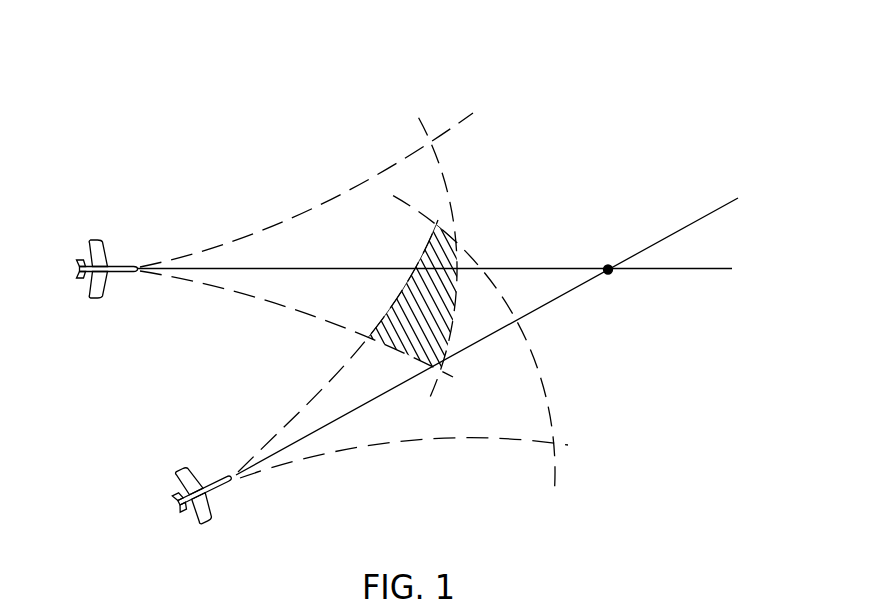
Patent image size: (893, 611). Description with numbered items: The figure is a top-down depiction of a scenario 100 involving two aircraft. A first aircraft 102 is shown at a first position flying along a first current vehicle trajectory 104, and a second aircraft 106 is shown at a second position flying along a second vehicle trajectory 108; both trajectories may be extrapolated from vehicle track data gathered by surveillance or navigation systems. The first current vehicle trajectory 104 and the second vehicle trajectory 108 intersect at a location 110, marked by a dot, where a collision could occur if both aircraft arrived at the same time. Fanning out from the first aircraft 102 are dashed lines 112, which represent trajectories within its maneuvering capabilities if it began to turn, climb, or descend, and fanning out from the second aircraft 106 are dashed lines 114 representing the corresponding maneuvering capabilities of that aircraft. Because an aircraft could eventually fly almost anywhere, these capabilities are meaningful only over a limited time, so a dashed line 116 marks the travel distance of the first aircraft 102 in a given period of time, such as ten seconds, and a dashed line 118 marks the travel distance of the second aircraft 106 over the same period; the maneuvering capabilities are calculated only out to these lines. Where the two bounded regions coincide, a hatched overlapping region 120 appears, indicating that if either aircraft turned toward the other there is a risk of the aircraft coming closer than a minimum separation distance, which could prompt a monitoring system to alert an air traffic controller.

The scenario 100 is at (182, 125).
The first aircraft 102 is at (124, 263).
The first current vehicle trajectory 104 is at (710, 270).
The second aircraft 106 is at (220, 490).
The second vehicle trajectory 108 is at (717, 208).
The location 110 is at (608, 266).
The dashed lines 112 is at (327, 205).
The dashed lines 114 is at (328, 385).
The dashed line 116 is at (442, 171).
The dashed line 118 is at (545, 403).
The overlapping region 120 is at (397, 303).